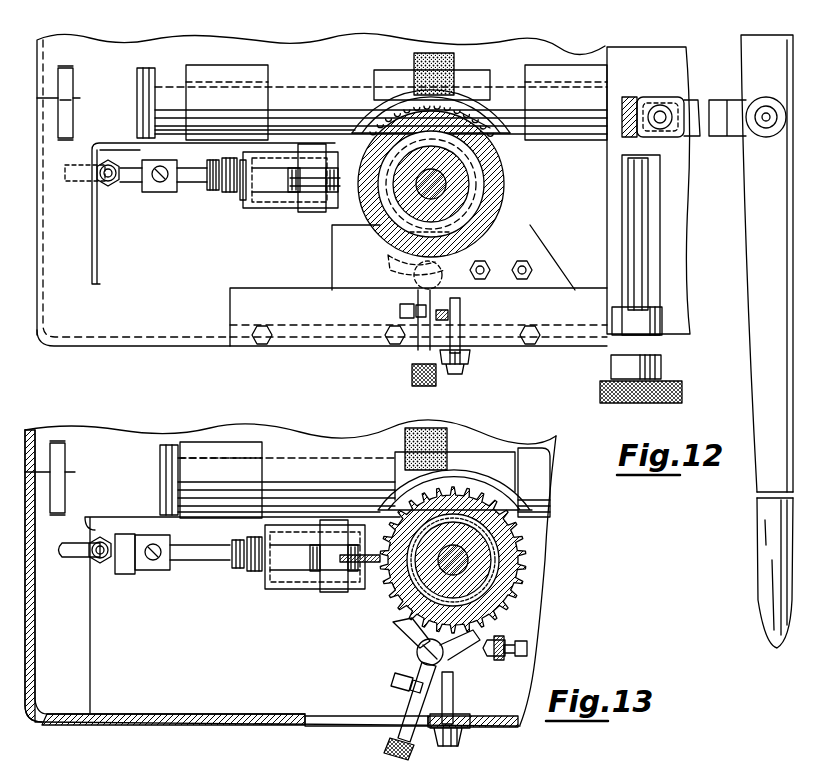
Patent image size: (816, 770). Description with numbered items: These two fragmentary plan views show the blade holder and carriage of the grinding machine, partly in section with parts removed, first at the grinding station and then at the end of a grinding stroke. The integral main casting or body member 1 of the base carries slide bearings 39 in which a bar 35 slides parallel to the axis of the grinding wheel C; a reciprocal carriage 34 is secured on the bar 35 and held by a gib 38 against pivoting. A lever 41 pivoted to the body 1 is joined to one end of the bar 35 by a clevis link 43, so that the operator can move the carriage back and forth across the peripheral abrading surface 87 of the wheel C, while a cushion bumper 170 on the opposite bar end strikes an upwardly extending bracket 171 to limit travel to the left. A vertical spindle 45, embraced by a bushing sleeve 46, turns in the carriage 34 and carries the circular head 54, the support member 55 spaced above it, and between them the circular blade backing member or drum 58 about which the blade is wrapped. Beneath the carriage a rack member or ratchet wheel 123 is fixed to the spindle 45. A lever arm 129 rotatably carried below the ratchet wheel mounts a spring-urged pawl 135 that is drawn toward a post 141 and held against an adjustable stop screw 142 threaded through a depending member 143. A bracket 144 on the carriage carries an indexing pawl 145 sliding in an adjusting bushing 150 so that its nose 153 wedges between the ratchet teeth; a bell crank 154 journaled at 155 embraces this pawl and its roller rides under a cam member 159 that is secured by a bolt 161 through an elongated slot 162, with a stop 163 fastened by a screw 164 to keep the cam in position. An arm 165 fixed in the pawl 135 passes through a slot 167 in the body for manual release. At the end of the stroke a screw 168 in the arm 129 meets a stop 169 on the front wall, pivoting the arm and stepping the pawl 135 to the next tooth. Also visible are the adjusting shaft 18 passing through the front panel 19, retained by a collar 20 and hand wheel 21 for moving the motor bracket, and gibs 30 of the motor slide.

In FIG. 12, the main casting or body member 1 is at (92, 347).
In FIG. 13, the main casting or body member 1 is at (90, 727).
In FIG. 12, the adjusting shaft 18 is at (650, 200).
In FIG. 12, the front panel 19 is at (662, 366).
In FIG. 12, the collar 20 is at (660, 318).
In FIG. 12, the hand wheel 21 is at (684, 392).
In FIG. 12, the gibs 30 is at (431, 231).
In FIG. 12, the reciprocal carriage 34 is at (476, 78).
In FIG. 13, the reciprocal carriage 34 is at (476, 450).
In FIG. 12, the bar 35 is at (305, 85).
In FIG. 13, the bar 35 is at (322, 464).
In FIG. 12, the gib 38 is at (252, 293).
In FIG. 12, the slide bearings 39 is at (216, 65).
In FIG. 13, the slide bearings 39 is at (222, 442).
In FIG. 12, the lever 41 is at (758, 535).
In FIG. 12, the clevis link 43 is at (697, 100).
In FIG. 12, the spindle 45 is at (450, 184).
In FIG. 13, the spindle 45 is at (453, 555).
In FIG. 12, the bushing sleeve 46 is at (470, 194).
In FIG. 13, the bushing sleeve 46 is at (453, 560).
In FIG. 12, the circular head 54 is at (372, 106).
In FIG. 13, the circular head 54 is at (380, 486).
In FIG. 13, the support member 55 is at (461, 497).
In FIG. 12, the blade backing member or drum 58 is at (488, 112).
In FIG. 13, the blade backing member or drum 58 is at (505, 498).
In FIG. 12, the peripheral abrading surface 87 is at (412, 82).
In FIG. 13, the peripheral abrading surface 87 is at (402, 466).
In FIG. 12, the grinding wheel C is at (420, 52).
In FIG. 13, the grinding wheel C is at (405, 428).
In FIG. 13, the rack member or ratchet wheel 123 is at (520, 580).
In FIG. 13, the lever arm 129 is at (460, 633).
In FIG. 12, the pawl 135 is at (445, 272).
In FIG. 13, the pawl 135 is at (400, 634).
In FIG. 12, the post 141 is at (525, 266).
In FIG. 13, the adjustable stop screw 142 is at (488, 656).
In FIG. 12, the member 143 is at (485, 266).
In FIG. 13, the member 143 is at (527, 652).
In FIG. 12, the bracket 144 is at (252, 208).
In FIG. 13, the bracket 144 is at (275, 589).
In FIG. 12, the indexing pawl 145 is at (340, 205).
In FIG. 13, the indexing pawl 145 is at (335, 592).
In FIG. 12, the adjusting bushing 150 is at (215, 192).
In FIG. 13, the adjusting bushing 150 is at (240, 572).
In FIG. 13, the nose 153 is at (360, 592).
In FIG. 12, the bell crank 154 is at (262, 208).
In FIG. 13, the bell crank 154 is at (285, 525).
In FIG. 12, the journal 155 is at (305, 212).
In FIG. 13, the journal 155 is at (325, 592).
In FIG. 12, the cam member 159 is at (185, 182).
In FIG. 13, the cam member 159 is at (215, 560).
In FIG. 12, the bolt 161 is at (112, 186).
In FIG. 13, the bolt 161 is at (105, 562).
In FIG. 13, the elongated slot 162 is at (125, 574).
In FIG. 12, the stop 163 is at (150, 192).
In FIG. 13, the stop 163 is at (150, 570).
In FIG. 12, the screw 164 is at (158, 186).
In FIG. 13, the screw 164 is at (160, 545).
In FIG. 12, the arm 165 is at (412, 362).
In FIG. 13, the arm 165 is at (415, 738).
In FIG. 13, the slot 167 is at (328, 714).
In FIG. 12, the screw 168 is at (448, 304).
In FIG. 13, the screw 168 is at (412, 695).
In FIG. 12, the stop 169 is at (462, 316).
In FIG. 13, the stop 169 is at (455, 698).
In FIG. 12, the cushion bumper 170 is at (137, 82).
In FIG. 13, the cushion bumper 170 is at (160, 482).
In FIG. 12, the bracket 171 is at (73, 112).
In FIG. 13, the bracket 171 is at (66, 476).